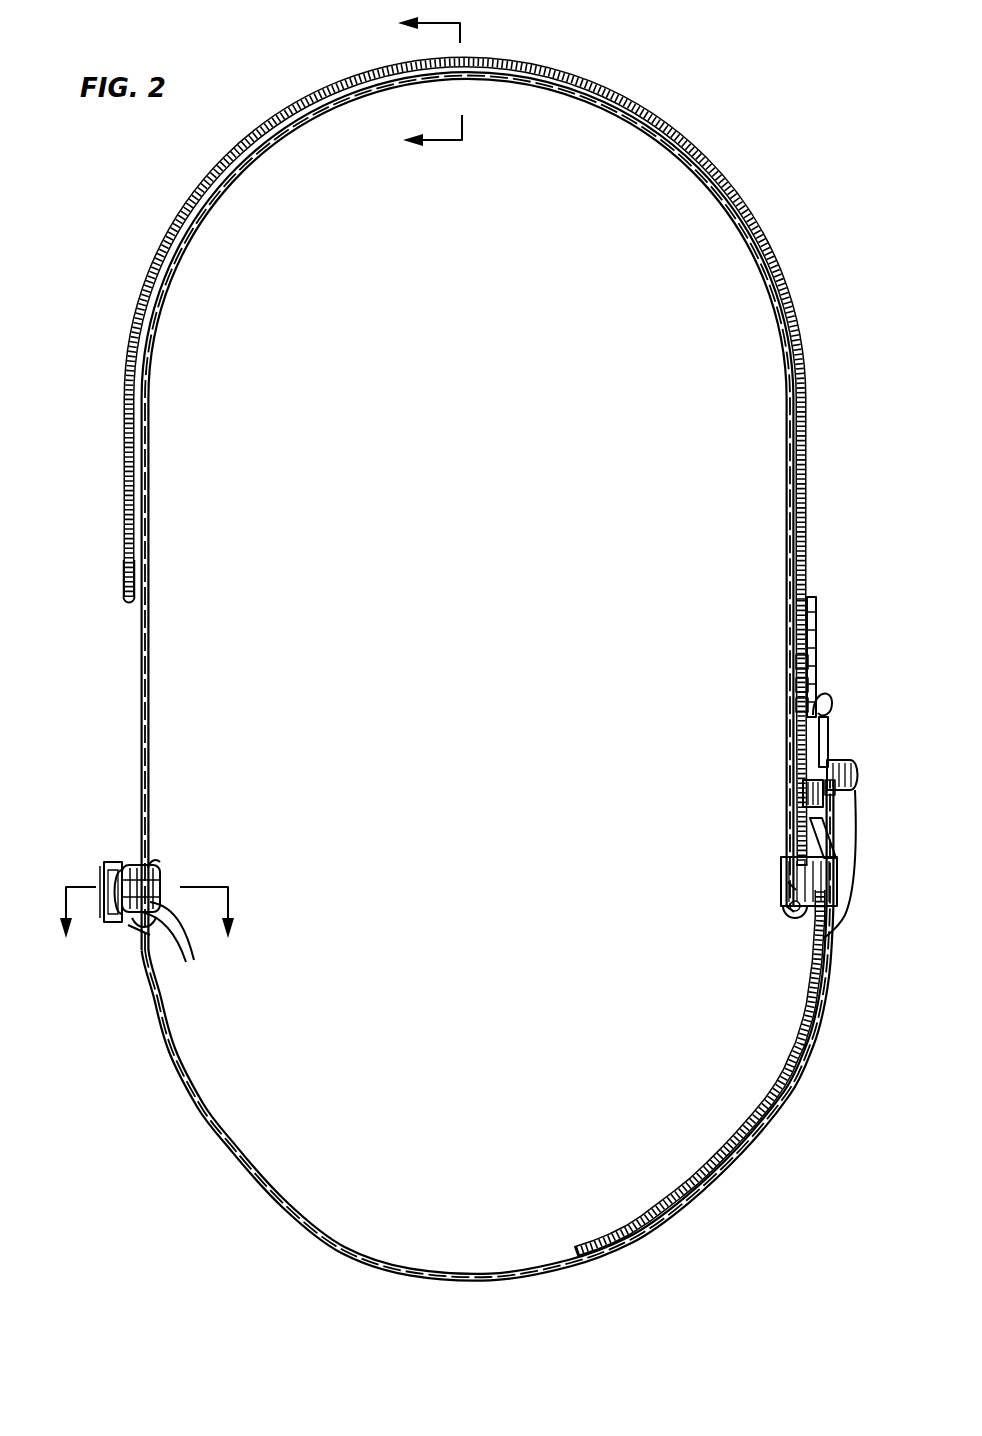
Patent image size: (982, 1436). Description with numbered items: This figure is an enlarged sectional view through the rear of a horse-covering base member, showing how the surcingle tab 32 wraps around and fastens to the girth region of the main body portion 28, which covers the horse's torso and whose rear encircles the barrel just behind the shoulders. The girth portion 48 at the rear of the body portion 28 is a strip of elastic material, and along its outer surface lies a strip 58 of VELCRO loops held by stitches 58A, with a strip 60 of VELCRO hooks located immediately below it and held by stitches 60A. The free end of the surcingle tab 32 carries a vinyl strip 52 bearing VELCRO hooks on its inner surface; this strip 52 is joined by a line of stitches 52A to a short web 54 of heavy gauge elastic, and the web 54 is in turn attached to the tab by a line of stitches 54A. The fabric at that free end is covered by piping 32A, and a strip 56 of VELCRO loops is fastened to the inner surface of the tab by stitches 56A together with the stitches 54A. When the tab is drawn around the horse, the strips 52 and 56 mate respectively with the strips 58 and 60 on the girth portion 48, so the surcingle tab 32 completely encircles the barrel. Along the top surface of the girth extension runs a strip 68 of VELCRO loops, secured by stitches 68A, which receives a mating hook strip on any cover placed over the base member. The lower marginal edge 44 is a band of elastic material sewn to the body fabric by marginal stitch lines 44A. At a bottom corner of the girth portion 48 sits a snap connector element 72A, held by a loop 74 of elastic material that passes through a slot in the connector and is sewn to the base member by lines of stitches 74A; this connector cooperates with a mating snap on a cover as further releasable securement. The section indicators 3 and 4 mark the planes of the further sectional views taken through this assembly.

The section line 3- 3 is at (444, 87).
The section line 4- 4 is at (147, 893).
The main body portion 28 is at (156, 731).
The surcingle tab 32 is at (375, 1248).
The piping 32A is at (822, 770).
The lower marginal edge 44 is at (136, 866).
The marginal stitch lines 44A is at (154, 868).
The girth portion 48 is at (798, 685).
The vinyl strip 52 is at (798, 662).
The line of stitches 52A is at (798, 703).
The web 54 is at (830, 727).
The line of stitches 54A is at (825, 915).
The strip 56 is at (674, 1200).
The stitches 56A is at (575, 1258).
The strip 58 is at (798, 636).
The stitches 58A is at (790, 567).
The strip 60 is at (790, 858).
The stitches 60A is at (803, 727).
The strip 68 is at (622, 95).
The stitches 68A is at (150, 594).
The snap connector element 72A is at (117, 924).
The loop 74 is at (108, 876).
The lines of stitches 74A is at (165, 936).